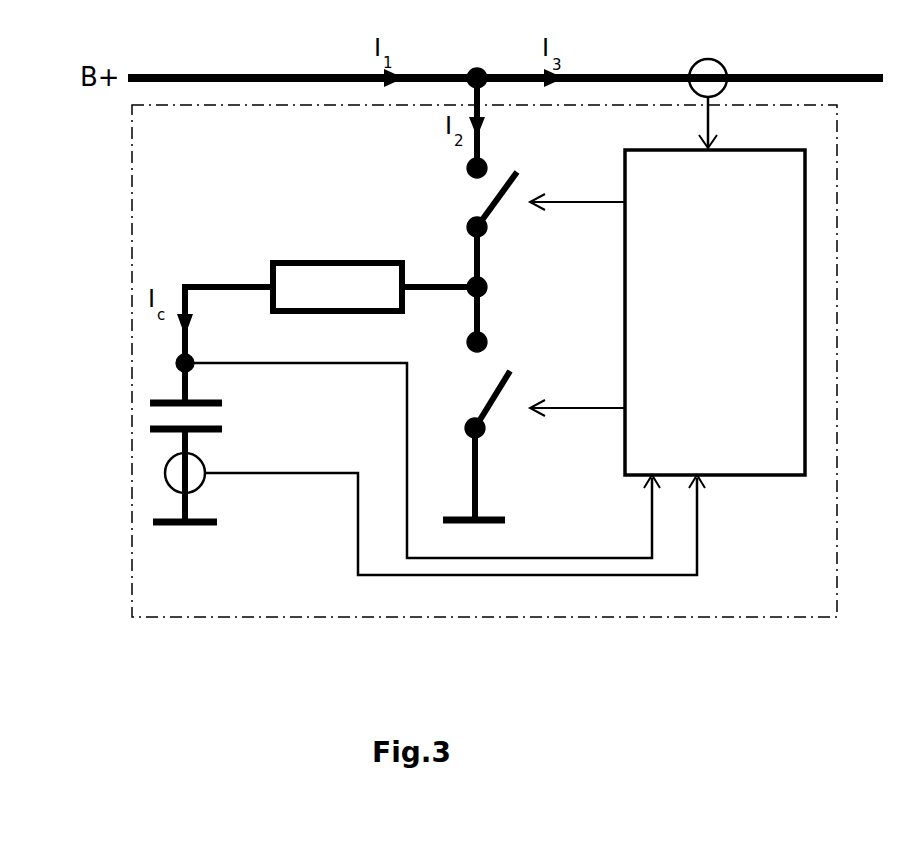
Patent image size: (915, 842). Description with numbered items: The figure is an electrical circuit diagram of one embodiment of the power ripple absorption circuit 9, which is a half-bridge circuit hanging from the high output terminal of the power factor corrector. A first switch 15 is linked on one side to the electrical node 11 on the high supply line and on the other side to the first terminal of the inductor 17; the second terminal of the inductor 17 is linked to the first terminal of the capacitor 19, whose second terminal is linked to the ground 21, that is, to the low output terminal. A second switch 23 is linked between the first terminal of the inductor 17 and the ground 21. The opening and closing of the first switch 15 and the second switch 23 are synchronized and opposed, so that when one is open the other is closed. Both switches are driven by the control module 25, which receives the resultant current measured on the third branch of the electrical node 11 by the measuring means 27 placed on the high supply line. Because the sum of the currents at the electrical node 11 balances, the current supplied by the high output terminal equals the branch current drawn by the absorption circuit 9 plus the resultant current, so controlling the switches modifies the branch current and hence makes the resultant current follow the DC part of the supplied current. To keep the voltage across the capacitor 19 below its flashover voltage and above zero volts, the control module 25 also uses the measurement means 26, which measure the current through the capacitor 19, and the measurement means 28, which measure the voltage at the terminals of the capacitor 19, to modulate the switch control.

The power ripple absorption circuit 9 is at (132, 190).
The electrical node 11 is at (478, 66).
The first switch 15 is at (490, 204).
The inductor 17 is at (305, 262).
The capacitor 19 is at (222, 404).
The ground 21 is at (188, 526).
The second switch 23 is at (485, 410).
The control module 25 is at (499, 362).
The measurement means 26 is at (165, 473).
The means which measure a first current or resultant current 27 is at (710, 58).
The measurement means 28 is at (178, 362).